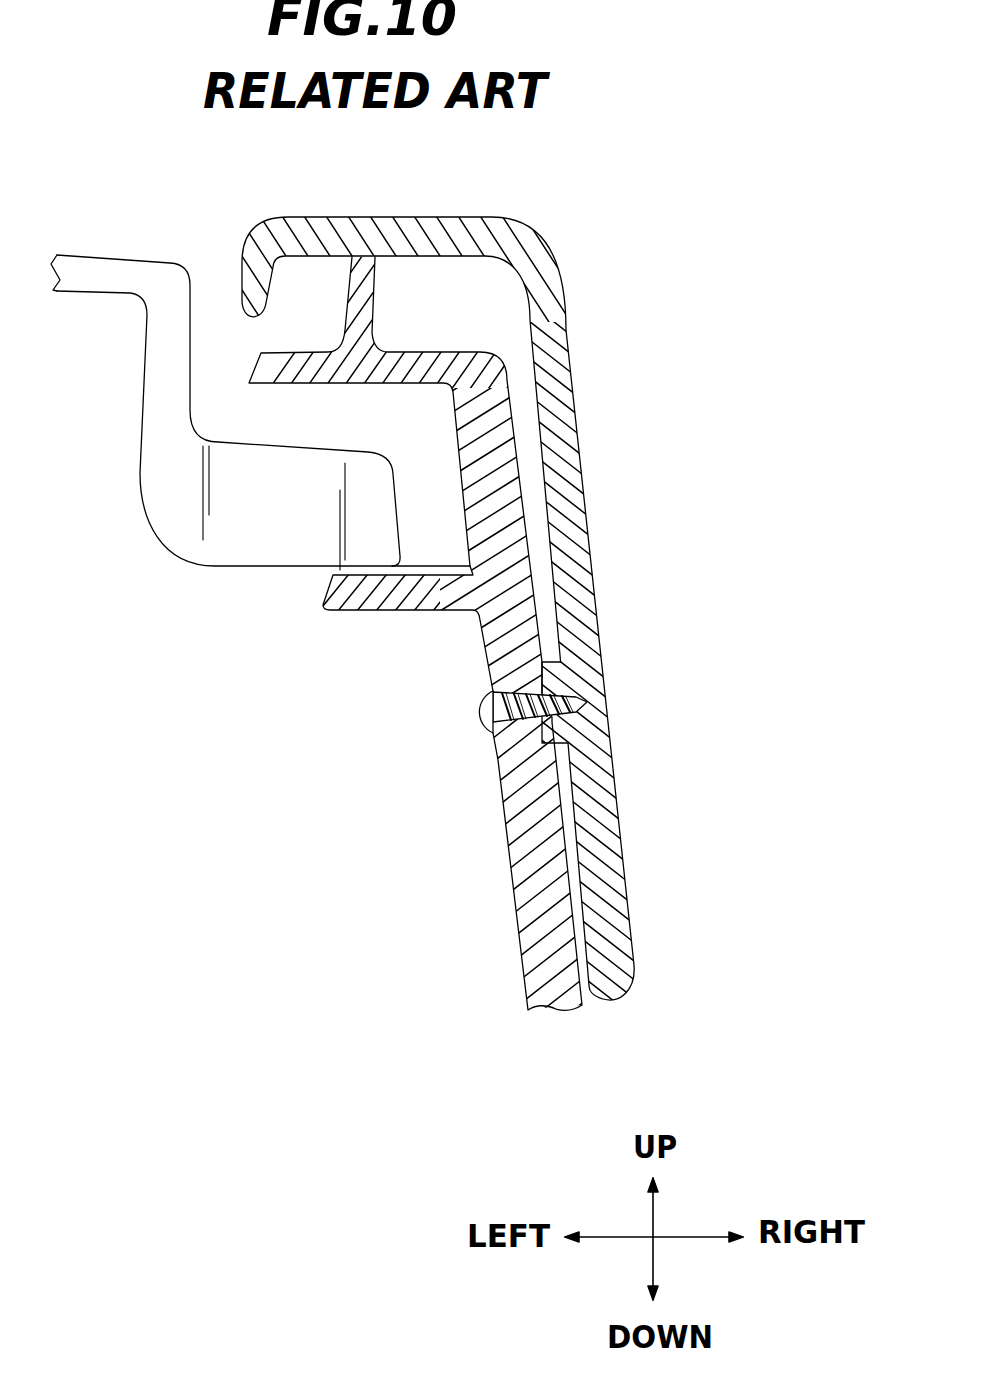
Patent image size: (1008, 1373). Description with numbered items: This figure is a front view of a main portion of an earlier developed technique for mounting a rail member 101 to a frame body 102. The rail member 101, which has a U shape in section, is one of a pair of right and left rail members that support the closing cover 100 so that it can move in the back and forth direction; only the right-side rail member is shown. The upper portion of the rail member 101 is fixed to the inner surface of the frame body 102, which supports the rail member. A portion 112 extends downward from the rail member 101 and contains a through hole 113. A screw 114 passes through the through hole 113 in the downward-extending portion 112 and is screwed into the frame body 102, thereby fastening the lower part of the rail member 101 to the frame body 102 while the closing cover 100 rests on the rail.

The closing cover 100 is at (182, 540).
The rail member 101 is at (382, 598).
The frame body 102 is at (573, 343).
The portion extending downward from the rail member 112 is at (518, 868).
The through hole 113 is at (523, 723).
The screw 114 is at (470, 713).